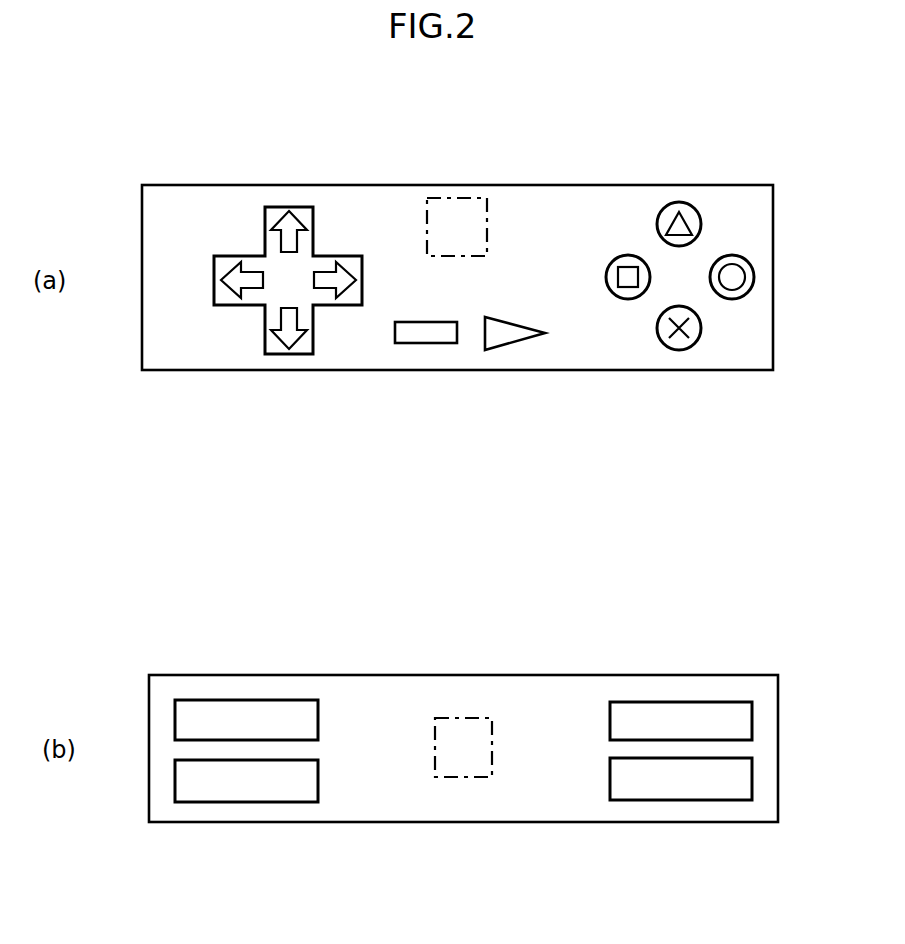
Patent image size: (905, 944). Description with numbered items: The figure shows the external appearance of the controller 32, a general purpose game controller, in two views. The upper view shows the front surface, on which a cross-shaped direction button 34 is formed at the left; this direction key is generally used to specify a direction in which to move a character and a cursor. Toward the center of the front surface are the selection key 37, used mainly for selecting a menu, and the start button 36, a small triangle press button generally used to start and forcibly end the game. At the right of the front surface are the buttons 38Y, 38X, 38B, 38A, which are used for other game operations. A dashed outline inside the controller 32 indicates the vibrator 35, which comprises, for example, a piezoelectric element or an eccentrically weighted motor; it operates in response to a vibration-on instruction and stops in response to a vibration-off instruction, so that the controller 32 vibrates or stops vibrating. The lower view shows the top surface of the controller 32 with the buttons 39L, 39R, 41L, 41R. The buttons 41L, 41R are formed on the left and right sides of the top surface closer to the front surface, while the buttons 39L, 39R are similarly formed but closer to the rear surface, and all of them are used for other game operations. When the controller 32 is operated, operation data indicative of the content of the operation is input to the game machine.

The controller 32 is at (197, 185).
The direction button 34 is at (316, 229).
The vibrator 35 is at (468, 197).
The start button 36 is at (517, 340).
The selection key 37 is at (428, 343).
The button 38Y is at (657, 226).
The button 38X is at (606, 276).
The button 38B is at (755, 277).
The button 38A is at (657, 332).
The button 39L is at (247, 700).
The button 39R is at (678, 702).
The button 41L is at (250, 802).
The button 41R is at (683, 800).